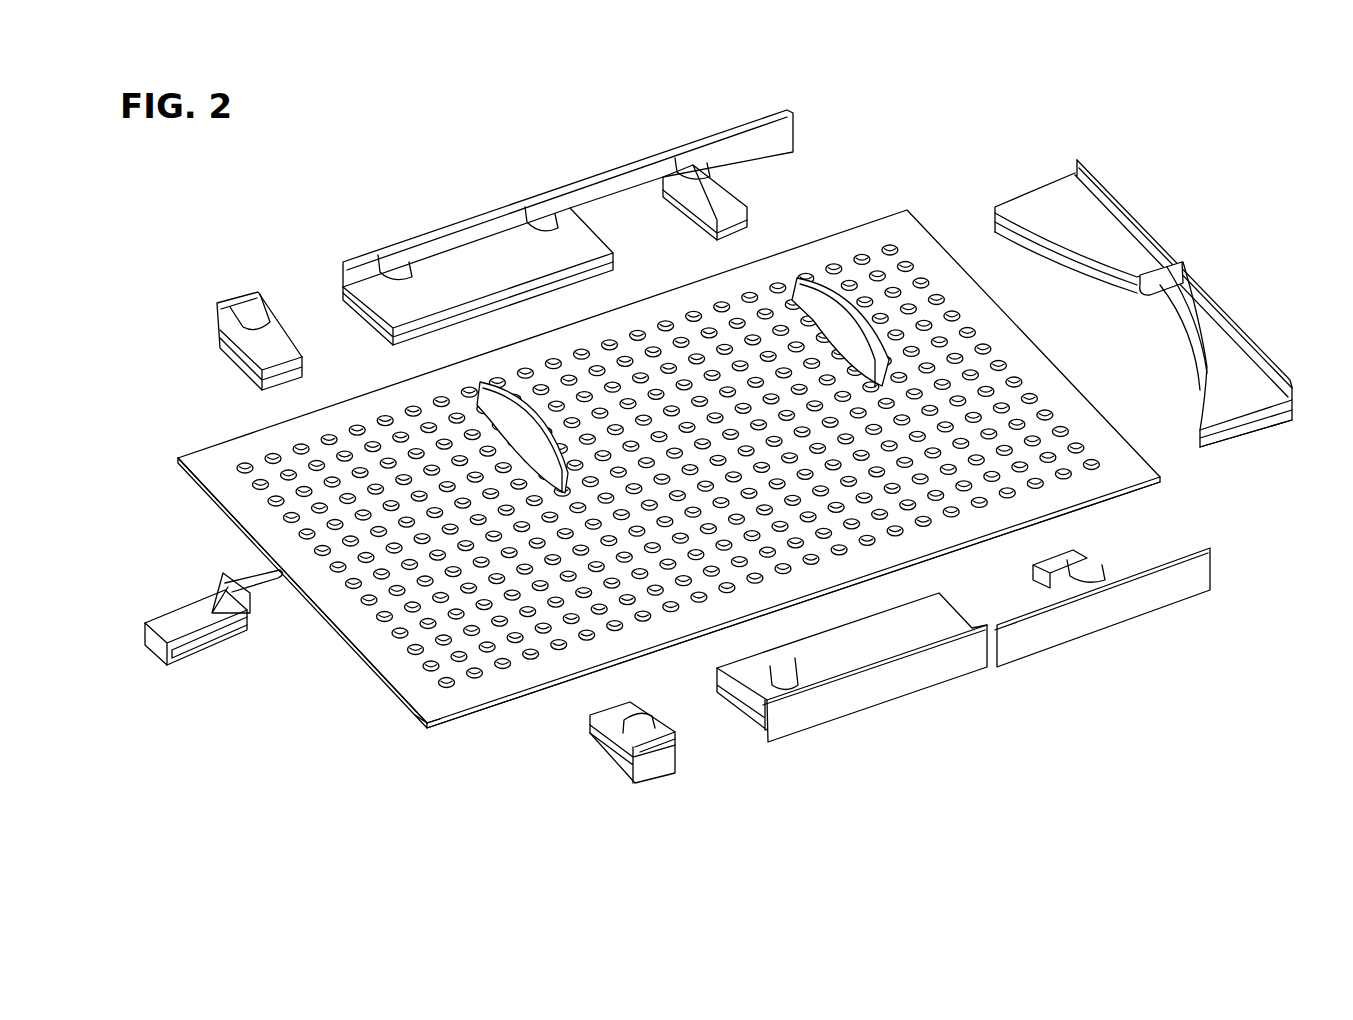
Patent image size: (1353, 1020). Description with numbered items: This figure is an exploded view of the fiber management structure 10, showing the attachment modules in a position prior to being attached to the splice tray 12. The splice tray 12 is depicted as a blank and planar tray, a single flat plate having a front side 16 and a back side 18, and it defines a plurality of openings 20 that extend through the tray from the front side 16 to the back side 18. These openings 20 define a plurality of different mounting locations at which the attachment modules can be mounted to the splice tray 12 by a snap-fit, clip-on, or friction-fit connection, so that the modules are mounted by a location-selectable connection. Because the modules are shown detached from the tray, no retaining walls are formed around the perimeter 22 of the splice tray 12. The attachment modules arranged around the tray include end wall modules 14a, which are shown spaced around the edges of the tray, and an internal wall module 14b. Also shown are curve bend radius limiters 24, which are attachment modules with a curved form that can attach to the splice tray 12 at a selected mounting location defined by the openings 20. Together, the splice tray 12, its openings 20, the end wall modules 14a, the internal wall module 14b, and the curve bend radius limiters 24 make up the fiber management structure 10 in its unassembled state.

The fiber management structure 10 is at (1170, 128).
The splice tray 12 is at (905, 222).
The end wall modules 14a is at (248, 285).
The internal wall modules 14b is at (185, 659).
The front side 16 is at (433, 715).
The back side 18 is at (336, 638).
The openings 20 is at (781, 284).
The perimeter 22 is at (943, 243).
The curve bend radius limiter 24 is at (832, 298).